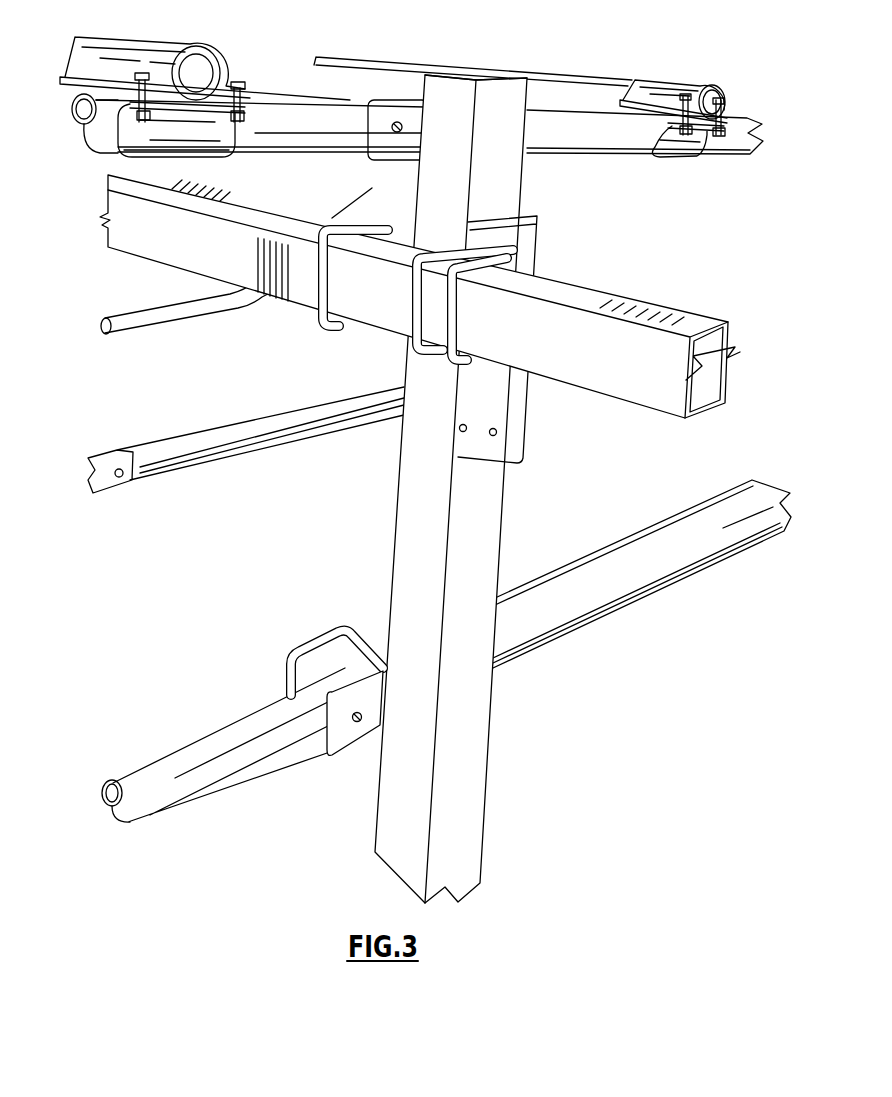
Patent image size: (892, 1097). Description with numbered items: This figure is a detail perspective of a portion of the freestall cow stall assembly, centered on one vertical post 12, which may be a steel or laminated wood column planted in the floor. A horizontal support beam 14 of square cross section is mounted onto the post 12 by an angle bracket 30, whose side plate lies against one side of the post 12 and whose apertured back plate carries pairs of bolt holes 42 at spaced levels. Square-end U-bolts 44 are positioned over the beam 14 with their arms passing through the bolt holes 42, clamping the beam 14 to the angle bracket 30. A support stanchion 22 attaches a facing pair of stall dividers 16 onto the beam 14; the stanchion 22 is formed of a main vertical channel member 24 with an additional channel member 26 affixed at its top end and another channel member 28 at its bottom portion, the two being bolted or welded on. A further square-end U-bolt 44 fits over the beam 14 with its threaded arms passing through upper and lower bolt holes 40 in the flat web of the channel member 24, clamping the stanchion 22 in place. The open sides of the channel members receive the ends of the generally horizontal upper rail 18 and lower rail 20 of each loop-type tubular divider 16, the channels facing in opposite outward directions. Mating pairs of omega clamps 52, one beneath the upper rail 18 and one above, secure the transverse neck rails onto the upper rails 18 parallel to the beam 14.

The vertical post 12 is at (468, 742).
The horizontal support beam 14 is at (678, 323).
The stall divider 16 is at (160, 297).
The upper rail 18 is at (288, 142).
The lower rail 20 is at (650, 580).
The support stanchion 22 is at (415, 457).
The main vertical channel member 24 is at (432, 97).
The additional channel member 26 is at (402, 143).
The channel member 28 is at (383, 742).
The angle bracket 30 is at (511, 354).
The bolt holes 40 is at (388, 228).
The bolt holes 42 is at (492, 434).
The square-end U-bolt 44 is at (410, 322).
The omega clamp 52 is at (163, 47).